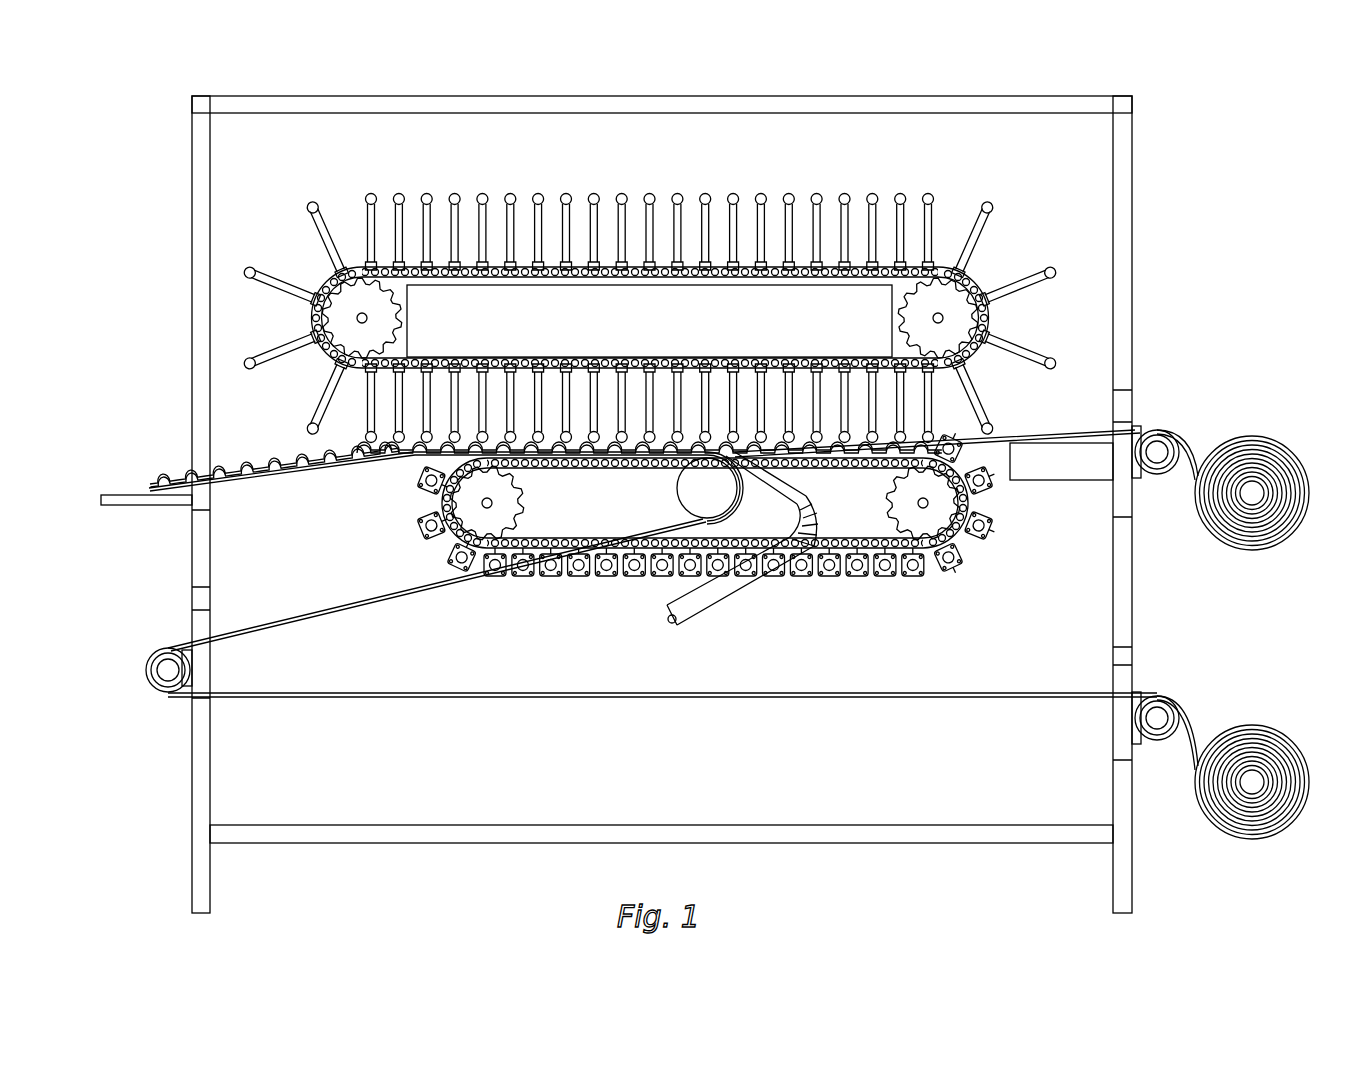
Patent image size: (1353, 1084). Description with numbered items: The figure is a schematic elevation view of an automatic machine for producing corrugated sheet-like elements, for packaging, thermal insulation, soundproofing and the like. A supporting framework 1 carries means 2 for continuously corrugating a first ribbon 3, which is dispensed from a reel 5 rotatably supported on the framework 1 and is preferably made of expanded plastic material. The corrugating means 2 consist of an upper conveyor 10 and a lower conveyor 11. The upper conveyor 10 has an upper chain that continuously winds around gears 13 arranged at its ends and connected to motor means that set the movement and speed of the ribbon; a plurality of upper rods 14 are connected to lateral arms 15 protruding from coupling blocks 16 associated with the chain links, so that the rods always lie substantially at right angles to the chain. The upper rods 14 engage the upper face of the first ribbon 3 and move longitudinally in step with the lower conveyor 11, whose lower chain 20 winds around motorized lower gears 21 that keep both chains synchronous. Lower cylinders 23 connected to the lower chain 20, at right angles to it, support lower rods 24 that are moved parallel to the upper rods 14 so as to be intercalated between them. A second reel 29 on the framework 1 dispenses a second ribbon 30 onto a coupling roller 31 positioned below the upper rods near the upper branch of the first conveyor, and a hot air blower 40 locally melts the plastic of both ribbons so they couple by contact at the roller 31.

The supporting framework 1 is at (1190, 332).
The means for continuously corrugating a first ribbon 2 is at (1010, 229).
The first ribbon 3 is at (252, 443).
The reel 5 is at (1272, 437).
The upper conveyor 10 is at (1038, 339).
The lower conveyor 11 is at (975, 555).
The gears 13 is at (400, 320).
The upper rods 14 is at (680, 190).
The lateral arms 15 is at (590, 212).
The coupling blocks 16 is at (1000, 272).
The lower chain 20 is at (829, 577).
The lower gears 21 is at (450, 505).
The lower cylinders 23 is at (915, 577).
The lower rods 24 is at (540, 452).
The reel 29 is at (1258, 725).
The second ribbon 30 is at (275, 486).
The coupling roller 31 is at (710, 512).
The hot air blower 40 is at (770, 506).